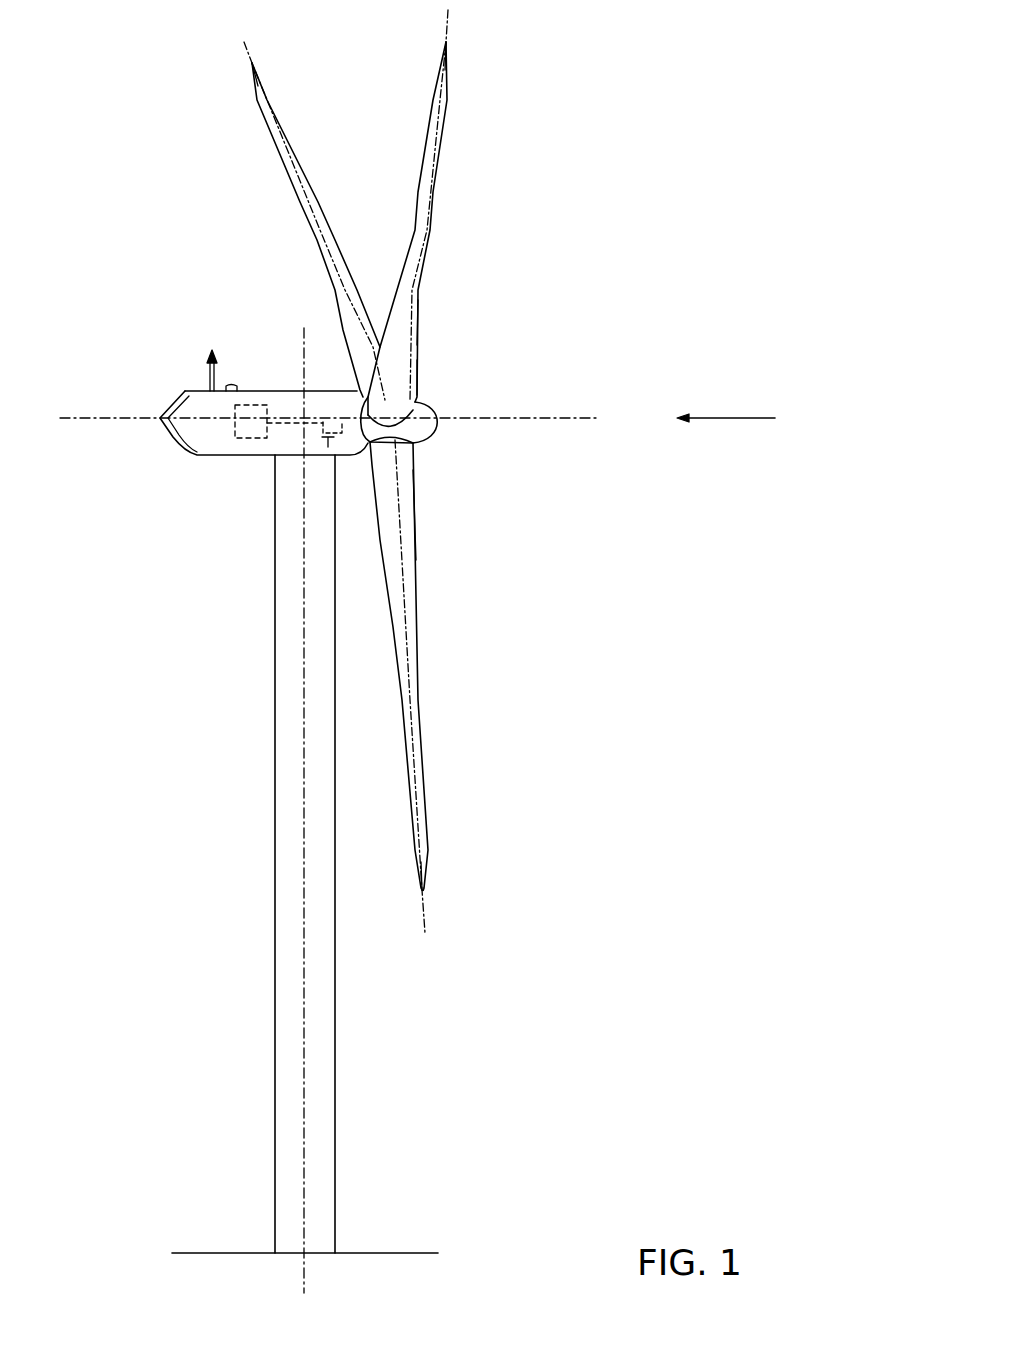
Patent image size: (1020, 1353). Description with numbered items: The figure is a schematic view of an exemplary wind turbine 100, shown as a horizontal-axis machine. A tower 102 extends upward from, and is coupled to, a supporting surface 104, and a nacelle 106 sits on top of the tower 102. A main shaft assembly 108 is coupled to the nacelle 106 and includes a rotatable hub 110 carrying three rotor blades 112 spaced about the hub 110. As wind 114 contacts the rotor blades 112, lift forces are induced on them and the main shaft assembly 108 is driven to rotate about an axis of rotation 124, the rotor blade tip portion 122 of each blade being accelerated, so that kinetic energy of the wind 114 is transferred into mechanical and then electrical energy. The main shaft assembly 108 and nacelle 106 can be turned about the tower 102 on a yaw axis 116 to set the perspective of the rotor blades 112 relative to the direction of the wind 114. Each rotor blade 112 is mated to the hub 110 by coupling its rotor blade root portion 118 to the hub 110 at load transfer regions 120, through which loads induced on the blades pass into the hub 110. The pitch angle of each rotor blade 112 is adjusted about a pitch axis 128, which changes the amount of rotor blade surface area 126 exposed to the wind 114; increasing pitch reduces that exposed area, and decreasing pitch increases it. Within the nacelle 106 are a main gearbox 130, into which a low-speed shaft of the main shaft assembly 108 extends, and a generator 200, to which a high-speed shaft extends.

The wind turbine 100 is at (633, 45).
The tower 102 is at (275, 1131).
The supporting surface 104 is at (203, 1253).
The nacelle 106 is at (200, 453).
The main shaft assembly 108 is at (432, 455).
The rotatable hub 110 is at (432, 411).
The rotor blades 112 is at (310, 202).
The wind 114 is at (718, 418).
The yaw axis 116 is at (303, 362).
The rotor blade root portion 118 is at (416, 553).
The load transfer regions 120 is at (418, 375).
The rotor blade tip portion 122 is at (262, 105).
The axis of rotation 124 is at (545, 421).
The rotor blade surface area 126 is at (418, 328).
The pitch axis 128 is at (243, 45).
The main gearbox 130 is at (328, 447).
The generator 200 is at (250, 438).